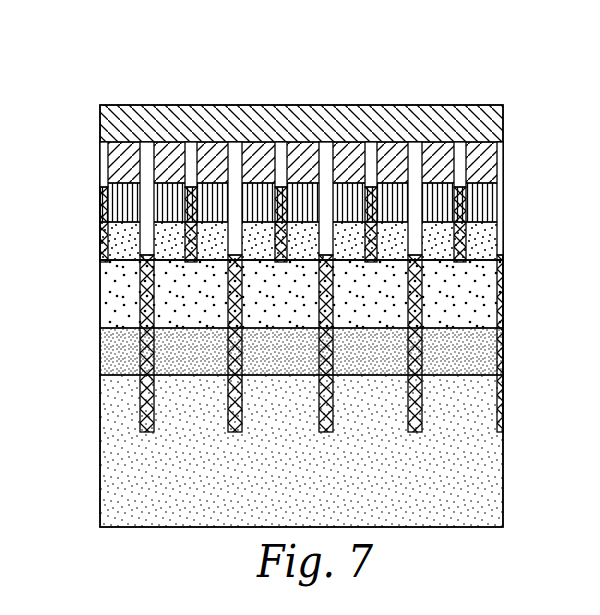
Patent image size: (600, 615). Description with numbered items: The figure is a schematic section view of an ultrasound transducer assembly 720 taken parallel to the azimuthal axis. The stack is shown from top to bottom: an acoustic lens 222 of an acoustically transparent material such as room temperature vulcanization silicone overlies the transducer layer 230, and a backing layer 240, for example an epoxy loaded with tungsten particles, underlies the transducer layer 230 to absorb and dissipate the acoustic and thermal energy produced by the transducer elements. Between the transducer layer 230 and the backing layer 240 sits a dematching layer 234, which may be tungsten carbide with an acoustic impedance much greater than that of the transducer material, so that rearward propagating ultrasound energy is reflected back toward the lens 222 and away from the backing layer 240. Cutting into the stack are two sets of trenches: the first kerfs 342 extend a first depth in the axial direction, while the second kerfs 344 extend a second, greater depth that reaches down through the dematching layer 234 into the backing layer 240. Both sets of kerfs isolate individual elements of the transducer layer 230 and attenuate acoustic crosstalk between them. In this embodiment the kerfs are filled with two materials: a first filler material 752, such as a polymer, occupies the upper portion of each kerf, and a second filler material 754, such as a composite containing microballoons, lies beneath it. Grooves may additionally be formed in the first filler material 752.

The ultrasound transducer assembly 720 is at (183, 86).
The acoustic lens 222 is at (119, 128).
The first kerfs 342 is at (205, 181).
The first filler material 752 is at (470, 150).
The second filler material 754 is at (423, 300).
The transducer layer 230 is at (118, 292).
The dematching layer 234 is at (112, 338).
The second kerfs 344 is at (138, 405).
The backing layer 240 is at (120, 453).